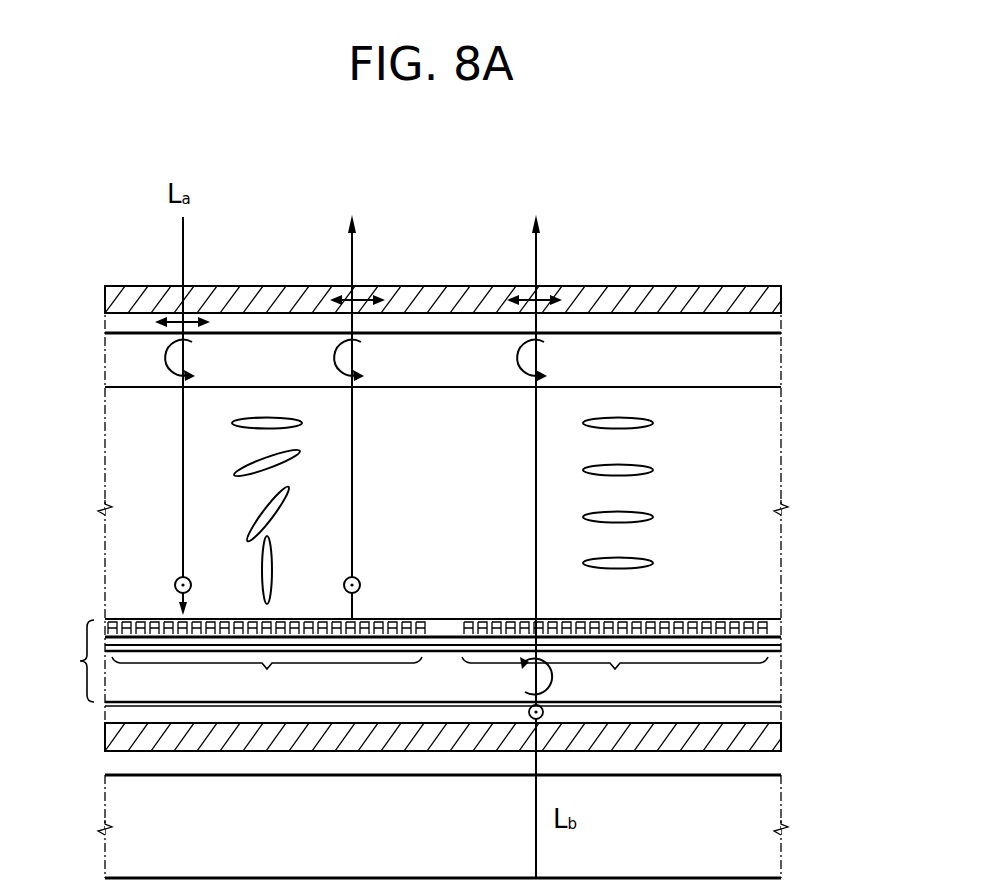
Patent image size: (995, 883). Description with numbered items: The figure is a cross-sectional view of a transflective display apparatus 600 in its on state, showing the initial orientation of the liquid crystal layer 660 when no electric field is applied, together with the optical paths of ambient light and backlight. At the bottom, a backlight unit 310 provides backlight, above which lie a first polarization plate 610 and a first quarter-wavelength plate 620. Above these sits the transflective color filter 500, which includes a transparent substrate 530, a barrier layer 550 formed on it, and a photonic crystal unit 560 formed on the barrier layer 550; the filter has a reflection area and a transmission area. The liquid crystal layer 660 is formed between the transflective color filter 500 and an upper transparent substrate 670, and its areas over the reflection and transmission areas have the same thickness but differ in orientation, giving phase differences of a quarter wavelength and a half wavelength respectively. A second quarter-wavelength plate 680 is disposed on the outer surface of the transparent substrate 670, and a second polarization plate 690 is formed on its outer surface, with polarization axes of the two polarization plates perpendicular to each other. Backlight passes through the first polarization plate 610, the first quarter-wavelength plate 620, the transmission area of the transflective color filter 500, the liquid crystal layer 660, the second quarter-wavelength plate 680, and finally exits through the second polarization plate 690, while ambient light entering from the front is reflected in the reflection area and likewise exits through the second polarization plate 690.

The transflective display apparatus 600 is at (776, 238).
The second polarization plate 690 is at (783, 294).
The second quarter-wavelength plate 680 is at (781, 324).
The transparent substrate 670 is at (781, 371).
The liquid crystal layer 660 is at (783, 548).
The photonic crystal unit 560 is at (783, 621).
The barrier layer 550 is at (783, 647).
The transparent substrate 530 is at (783, 679).
The transflective color filter 500 is at (61, 661).
The first quarter-wavelength plate 620 is at (783, 714).
The first polarization plate 610 is at (783, 738).
The backlight unit 310 is at (783, 849).